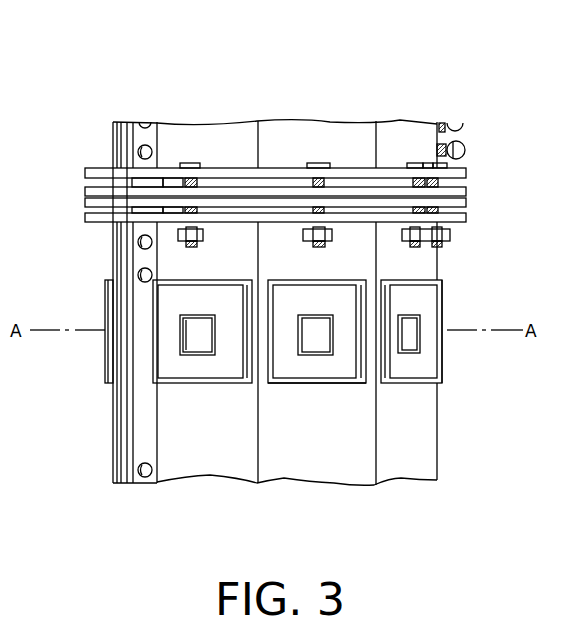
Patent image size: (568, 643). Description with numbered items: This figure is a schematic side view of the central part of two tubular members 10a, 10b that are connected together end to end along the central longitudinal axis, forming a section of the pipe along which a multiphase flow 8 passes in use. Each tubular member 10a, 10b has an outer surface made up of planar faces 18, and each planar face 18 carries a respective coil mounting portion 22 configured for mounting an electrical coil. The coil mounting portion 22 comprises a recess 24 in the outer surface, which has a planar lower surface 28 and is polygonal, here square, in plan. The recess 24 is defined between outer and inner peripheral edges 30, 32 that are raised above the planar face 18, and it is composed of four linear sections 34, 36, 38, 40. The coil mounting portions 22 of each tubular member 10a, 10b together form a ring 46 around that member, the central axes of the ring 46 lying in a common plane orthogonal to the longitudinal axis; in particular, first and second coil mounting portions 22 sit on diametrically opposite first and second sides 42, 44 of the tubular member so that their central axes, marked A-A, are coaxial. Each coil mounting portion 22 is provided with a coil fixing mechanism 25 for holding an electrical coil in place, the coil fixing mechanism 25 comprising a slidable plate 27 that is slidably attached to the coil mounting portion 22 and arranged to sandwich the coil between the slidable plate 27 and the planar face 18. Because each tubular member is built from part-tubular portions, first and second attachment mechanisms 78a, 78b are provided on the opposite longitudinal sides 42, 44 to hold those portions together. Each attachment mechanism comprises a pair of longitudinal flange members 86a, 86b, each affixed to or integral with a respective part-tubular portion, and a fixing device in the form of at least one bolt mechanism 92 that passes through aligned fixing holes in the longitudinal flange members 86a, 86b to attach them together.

The multiphase flow 8 is at (205, 133).
The tubular member 10a is at (173, 130).
The tubular member 10b is at (208, 476).
The planar face 18 is at (185, 467).
The coil mounting portion 22 is at (230, 278).
The recess 24 is at (200, 372).
The coil fixing mechanism 25 is at (429, 293).
The slidable plate 27 is at (319, 233).
The planar lower surface 28 is at (228, 358).
The outer peripheral edge 30 is at (283, 273).
The inner peripheral edge 32 is at (321, 316).
The linear section 34 is at (272, 333).
The linear section 36 is at (338, 387).
The linear section 38 is at (362, 370).
The linear section 40 is at (349, 283).
The first side 42 is at (105, 363).
The second side 44 is at (446, 350).
The ring of coil mounting portions 46 is at (409, 283).
The first attachment mechanism 78a is at (123, 438).
The second attachment mechanism 78b is at (465, 148).
The longitudinal flange member 86a is at (113, 135).
The longitudinal flange member 86b is at (145, 137).
The bolt mechanism 92 is at (143, 477).